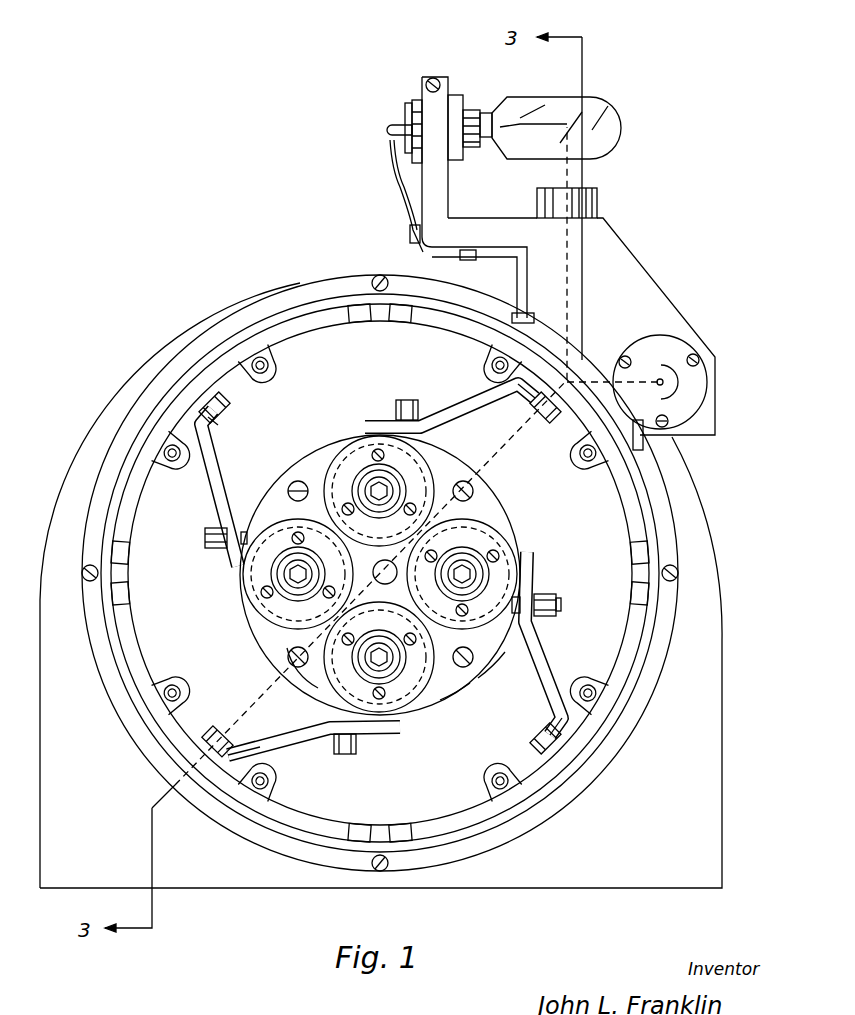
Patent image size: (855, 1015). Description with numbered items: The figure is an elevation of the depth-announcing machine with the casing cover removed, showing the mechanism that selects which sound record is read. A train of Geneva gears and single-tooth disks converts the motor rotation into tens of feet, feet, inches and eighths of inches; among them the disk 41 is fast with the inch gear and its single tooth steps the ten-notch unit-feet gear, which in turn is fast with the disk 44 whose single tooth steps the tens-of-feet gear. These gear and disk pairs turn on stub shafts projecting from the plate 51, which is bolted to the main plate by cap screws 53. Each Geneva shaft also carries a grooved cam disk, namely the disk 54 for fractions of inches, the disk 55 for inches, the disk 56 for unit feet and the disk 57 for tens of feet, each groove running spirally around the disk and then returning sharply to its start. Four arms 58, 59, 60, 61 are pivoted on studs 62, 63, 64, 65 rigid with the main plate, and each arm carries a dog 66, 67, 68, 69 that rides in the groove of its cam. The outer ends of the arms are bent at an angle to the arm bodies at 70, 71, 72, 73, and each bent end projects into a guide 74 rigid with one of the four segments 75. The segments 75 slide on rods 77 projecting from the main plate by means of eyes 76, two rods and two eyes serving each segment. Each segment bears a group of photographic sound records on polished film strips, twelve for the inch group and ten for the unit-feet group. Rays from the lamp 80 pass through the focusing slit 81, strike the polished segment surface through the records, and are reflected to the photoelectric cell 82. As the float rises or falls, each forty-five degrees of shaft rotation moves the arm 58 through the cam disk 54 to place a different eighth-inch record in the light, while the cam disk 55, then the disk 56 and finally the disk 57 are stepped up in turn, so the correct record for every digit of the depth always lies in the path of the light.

The disk 41 is at (290, 640).
The disk 44 is at (462, 688).
The plate 51 is at (494, 672).
The cap screws 53 is at (297, 480).
The grooved disk 54 is at (400, 485).
The grooved disk 55 is at (283, 584).
The grooved disk 56 is at (389, 665).
The grooved disk 57 is at (481, 573).
The arm 58 is at (468, 410).
The arm 59 is at (226, 468).
The arm 60 is at (300, 742).
The arm 61 is at (548, 642).
The stud 62 is at (400, 400).
The stud 63 is at (216, 550).
The stud 64 is at (358, 744).
The stud 65 is at (550, 594).
The dog 66 is at (374, 488).
The dog 67 is at (293, 572).
The dog 68 is at (386, 657).
The dog 69 is at (467, 574).
The bent outer end of arm 70 is at (526, 404).
The bent outer end of arm 71 is at (216, 430).
The bent outer end of arm 72 is at (246, 744).
The bent outer end of arm 73 is at (548, 720).
The guide 74 is at (234, 410).
The segment 75 is at (327, 320).
The eye 76 is at (488, 358).
The rod 77 is at (490, 366).
The lamp 80 is at (614, 110).
The focusing slit 81 is at (600, 195).
The photoelectric cell 82 is at (672, 350).